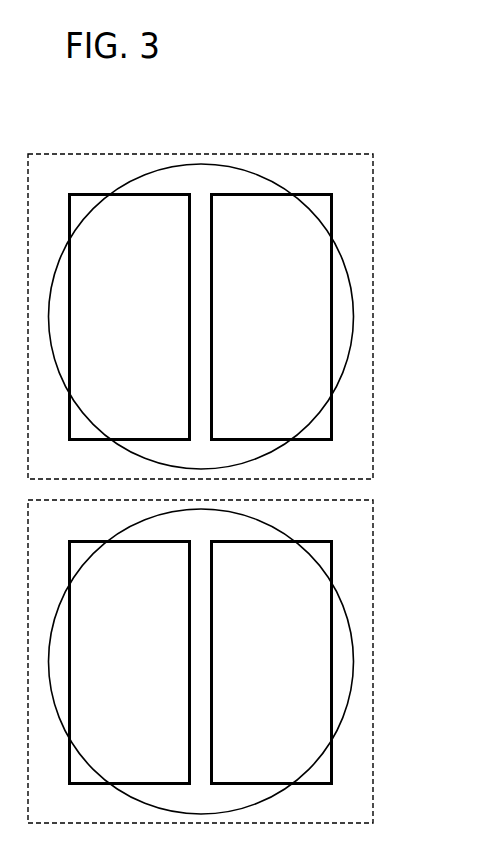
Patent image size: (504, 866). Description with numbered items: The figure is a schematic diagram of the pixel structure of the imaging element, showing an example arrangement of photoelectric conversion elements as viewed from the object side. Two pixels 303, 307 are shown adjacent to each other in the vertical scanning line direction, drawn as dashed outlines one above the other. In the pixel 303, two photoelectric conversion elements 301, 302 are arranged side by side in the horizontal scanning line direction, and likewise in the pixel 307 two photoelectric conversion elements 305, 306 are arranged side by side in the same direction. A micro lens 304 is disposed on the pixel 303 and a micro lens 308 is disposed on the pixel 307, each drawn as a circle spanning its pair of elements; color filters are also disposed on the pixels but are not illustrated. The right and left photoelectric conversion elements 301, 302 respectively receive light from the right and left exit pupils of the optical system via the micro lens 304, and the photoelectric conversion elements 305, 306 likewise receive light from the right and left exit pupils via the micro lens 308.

The photoelectric conversion element 301 is at (71, 313).
The photoelectric conversion element 302 is at (213, 313).
The pixel 303 is at (373, 228).
The micro lens 304 is at (368, 310).
The photoelectric conversion element 305 is at (71, 660).
The photoelectric conversion element 306 is at (213, 660).
The pixel 307 is at (373, 573).
The micro lens 308 is at (355, 663).